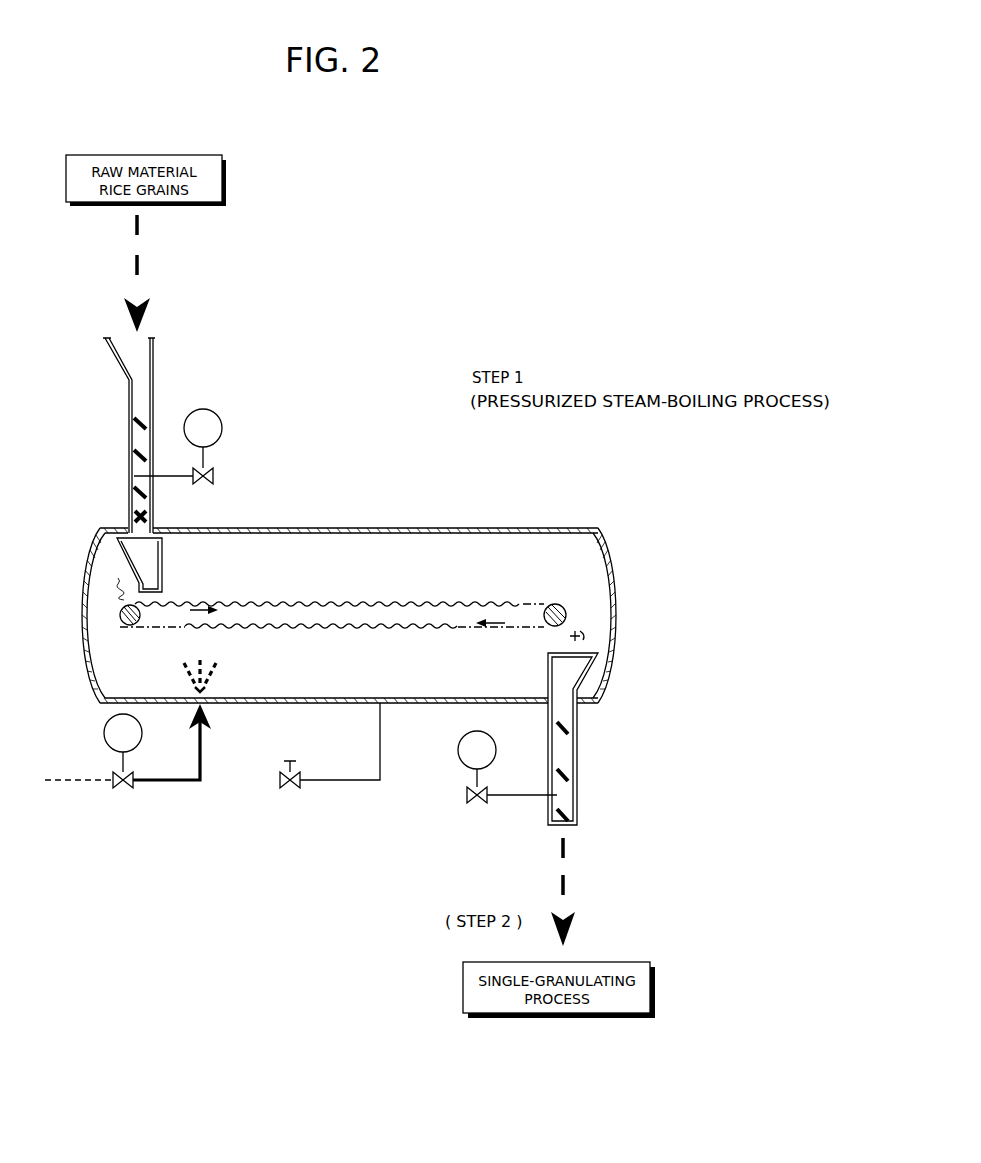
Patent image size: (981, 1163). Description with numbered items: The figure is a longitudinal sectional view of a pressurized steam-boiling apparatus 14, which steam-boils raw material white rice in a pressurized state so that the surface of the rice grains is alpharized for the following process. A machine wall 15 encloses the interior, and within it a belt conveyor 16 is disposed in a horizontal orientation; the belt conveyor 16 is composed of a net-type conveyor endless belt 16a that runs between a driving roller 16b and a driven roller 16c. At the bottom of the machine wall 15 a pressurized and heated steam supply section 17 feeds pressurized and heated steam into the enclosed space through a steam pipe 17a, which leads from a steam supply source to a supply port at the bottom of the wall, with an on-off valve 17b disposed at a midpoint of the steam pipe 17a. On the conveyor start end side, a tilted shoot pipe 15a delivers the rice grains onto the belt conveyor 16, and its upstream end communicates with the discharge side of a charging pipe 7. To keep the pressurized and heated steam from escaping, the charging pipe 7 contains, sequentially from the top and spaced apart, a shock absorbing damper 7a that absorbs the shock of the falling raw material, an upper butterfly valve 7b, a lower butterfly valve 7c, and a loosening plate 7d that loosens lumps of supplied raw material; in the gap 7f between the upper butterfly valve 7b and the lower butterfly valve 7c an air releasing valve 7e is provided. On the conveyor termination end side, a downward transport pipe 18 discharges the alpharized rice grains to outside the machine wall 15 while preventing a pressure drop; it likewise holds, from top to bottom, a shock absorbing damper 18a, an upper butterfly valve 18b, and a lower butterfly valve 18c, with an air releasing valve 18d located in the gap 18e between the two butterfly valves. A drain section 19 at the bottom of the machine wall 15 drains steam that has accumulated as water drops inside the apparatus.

The charging pipe 7 is at (153, 408).
The shock absorbing damper 7a is at (132, 423).
The upper butterfly valve 7b is at (132, 455).
The lower butterfly valve 7c is at (132, 493).
The loosening plate 7d is at (133, 522).
The air releasing valve 7e is at (228, 455).
The gap 7f is at (132, 476).
The pressurized steam-boiling apparatus 14 is at (447, 336).
The machine wall 15 is at (367, 528).
The tilted shoot pipe 15a is at (163, 556).
The belt conveyor 16 is at (357, 607).
The conveyor endless belt 16a is at (335, 603).
The driving roller 16b is at (130, 626).
The driven roller 16c is at (563, 606).
The pressurized and heated steam supply section 17 is at (147, 781).
The steam pipe 17a is at (147, 817).
The on-off valve 17b is at (135, 784).
The downward transport pipe 18 is at (578, 718).
The shock absorbing damper 18a is at (569, 732).
The upper butterfly valve 18b is at (569, 775).
The lower butterfly valve 18c is at (569, 818).
The air releasing valve 18d is at (466, 792).
The gap 18e is at (565, 797).
The drain section 19 is at (392, 802).